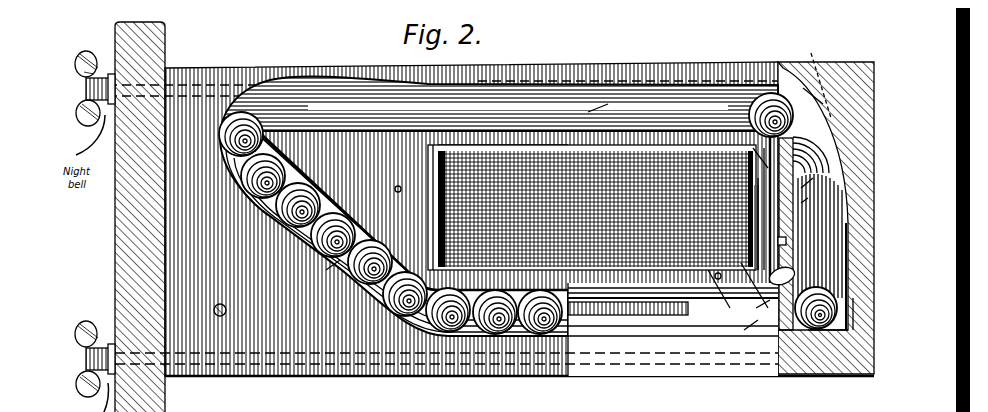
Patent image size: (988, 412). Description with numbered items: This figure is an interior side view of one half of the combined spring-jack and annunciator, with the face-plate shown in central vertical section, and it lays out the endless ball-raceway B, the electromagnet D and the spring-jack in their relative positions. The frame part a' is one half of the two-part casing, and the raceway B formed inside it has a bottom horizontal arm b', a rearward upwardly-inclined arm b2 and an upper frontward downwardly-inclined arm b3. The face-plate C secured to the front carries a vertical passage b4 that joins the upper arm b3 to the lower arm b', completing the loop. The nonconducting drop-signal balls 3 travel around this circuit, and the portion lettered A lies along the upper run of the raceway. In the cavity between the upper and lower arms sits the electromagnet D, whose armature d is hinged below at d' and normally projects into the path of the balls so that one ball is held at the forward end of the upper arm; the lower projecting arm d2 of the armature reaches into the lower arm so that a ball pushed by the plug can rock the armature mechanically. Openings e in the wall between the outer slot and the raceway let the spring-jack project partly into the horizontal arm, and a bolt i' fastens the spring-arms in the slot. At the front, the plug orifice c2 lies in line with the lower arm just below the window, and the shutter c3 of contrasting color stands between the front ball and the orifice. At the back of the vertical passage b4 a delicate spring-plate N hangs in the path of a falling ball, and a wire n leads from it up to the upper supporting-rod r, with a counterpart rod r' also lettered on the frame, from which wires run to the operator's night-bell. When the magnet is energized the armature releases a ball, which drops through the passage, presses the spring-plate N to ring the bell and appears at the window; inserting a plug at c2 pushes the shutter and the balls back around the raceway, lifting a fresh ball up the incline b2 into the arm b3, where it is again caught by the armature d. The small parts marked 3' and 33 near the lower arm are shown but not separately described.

The balls 3 is at (528, 213).
The ball track / raceway A is at (499, 203).
The ball-raceway B is at (348, 207).
The face-plate C is at (833, 56).
The electromagnet D is at (577, 184).
The spring-plate N is at (770, 236).
The frame part a' is at (377, 172).
The rearward upwardly-inclined arm b2 is at (327, 263).
The upper frontward downwardly-inclined arm b3 is at (583, 115).
The vertical bore or passage b4 is at (814, 189).
The bottom horizontal arm b' is at (751, 326).
The plug socket or orifice c2 is at (857, 306).
The shutter c3 is at (837, 283).
The armature d is at (746, 213).
The armature hinge d' is at (763, 304).
The lower projecting arm of the armature d2 is at (782, 276).
The openings e is at (610, 312).
The bolt i' is at (162, 217).
The wire n is at (814, 79).
The upper supporting-rod r is at (471, 211).
The casing bottom r' is at (519, 352).
The ball stop 3' is at (628, 325).
The lever 33 is at (733, 255).